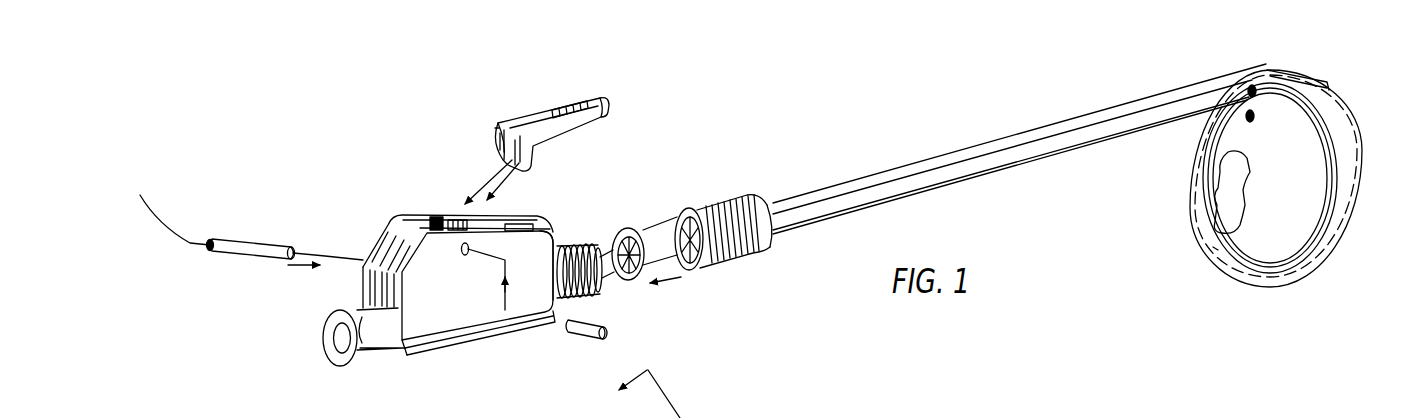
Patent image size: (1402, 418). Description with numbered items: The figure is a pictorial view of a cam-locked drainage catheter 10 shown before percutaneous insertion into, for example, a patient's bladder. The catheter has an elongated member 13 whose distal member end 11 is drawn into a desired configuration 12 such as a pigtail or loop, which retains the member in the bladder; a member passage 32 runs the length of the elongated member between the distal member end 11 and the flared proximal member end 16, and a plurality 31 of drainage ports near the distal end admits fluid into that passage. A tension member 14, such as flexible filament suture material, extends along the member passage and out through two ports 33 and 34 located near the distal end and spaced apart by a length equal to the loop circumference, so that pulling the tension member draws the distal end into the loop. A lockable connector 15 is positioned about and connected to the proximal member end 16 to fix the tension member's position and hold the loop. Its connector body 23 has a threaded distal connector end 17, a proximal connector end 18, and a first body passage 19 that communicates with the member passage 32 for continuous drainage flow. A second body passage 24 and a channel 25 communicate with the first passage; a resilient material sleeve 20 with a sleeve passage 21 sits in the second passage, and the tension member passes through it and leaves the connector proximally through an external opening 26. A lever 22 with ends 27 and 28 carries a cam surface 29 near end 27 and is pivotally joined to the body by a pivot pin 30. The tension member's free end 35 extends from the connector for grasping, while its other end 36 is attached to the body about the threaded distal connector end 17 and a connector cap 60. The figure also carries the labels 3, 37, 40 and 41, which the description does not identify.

The section line 3 is at (649, 383).
The cam-locked drainage catheter 10 is at (954, 174).
The distal member end 11 is at (1288, 287).
The desired configuration 12 is at (1302, 190).
The elongated member 13 is at (973, 150).
The tension member 14 is at (302, 250).
The lockable connector 15 is at (372, 220).
The proximal member end 16 is at (635, 226).
The distal connector end 17 is at (569, 238).
The proximal connector end 18 is at (326, 312).
The first body passage 19 is at (340, 343).
The resilient material sleeve 20 is at (240, 255).
The sleeve passage 21 is at (200, 250).
The lever 22 is at (566, 107).
The connector body 23 is at (420, 330).
The second body passage 24 is at (377, 252).
The channel 25 is at (438, 216).
The external opening 26 is at (380, 268).
The lever end 27 is at (495, 129).
The lever end 28 is at (609, 109).
The cam surface 29 is at (509, 157).
The pivot pin 30 is at (573, 336).
The plurality of drainage ports 31 is at (1244, 192).
The member passage 32 is at (1233, 271).
The port 33 is at (1248, 91).
The port 34 is at (1255, 116).
The tension member end 35 is at (147, 221).
The tension member end 36 is at (600, 295).
The slot 37 is at (556, 107).
The housing end wall 40 is at (536, 226).
The channel 41 is at (513, 221).
The connector cap 60 is at (731, 261).